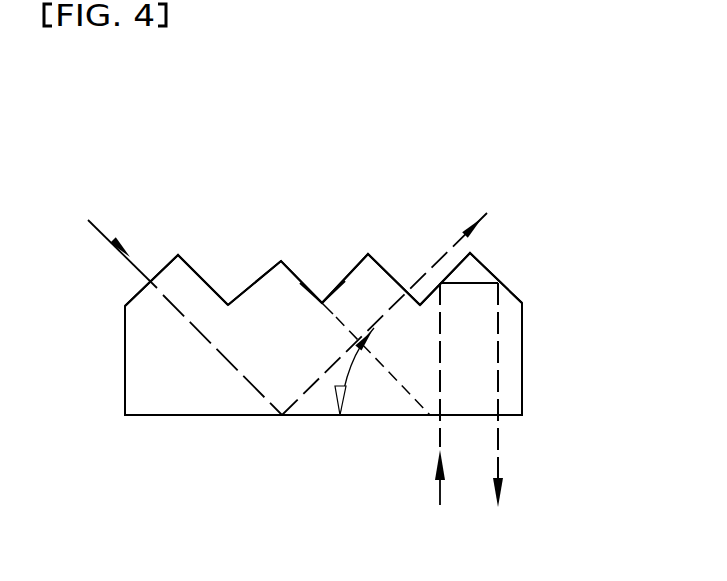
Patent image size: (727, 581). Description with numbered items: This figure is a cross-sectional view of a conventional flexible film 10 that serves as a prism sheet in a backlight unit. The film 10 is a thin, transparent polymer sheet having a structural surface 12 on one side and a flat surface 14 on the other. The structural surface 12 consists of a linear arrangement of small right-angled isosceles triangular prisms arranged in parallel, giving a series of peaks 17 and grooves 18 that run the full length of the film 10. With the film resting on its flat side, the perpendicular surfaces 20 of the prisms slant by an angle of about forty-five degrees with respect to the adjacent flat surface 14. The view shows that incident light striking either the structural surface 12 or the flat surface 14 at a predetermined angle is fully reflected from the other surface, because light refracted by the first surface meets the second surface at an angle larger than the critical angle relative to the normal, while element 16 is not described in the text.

The film 10 is at (218, 434).
The structural surface 12 is at (279, 287).
The flat surface 14 is at (253, 416).
The prism apex 16 is at (281, 262).
The peaks 17 is at (178, 255).
The grooves 18 is at (322, 302).
The perpendicular surfaces 20 is at (357, 266).